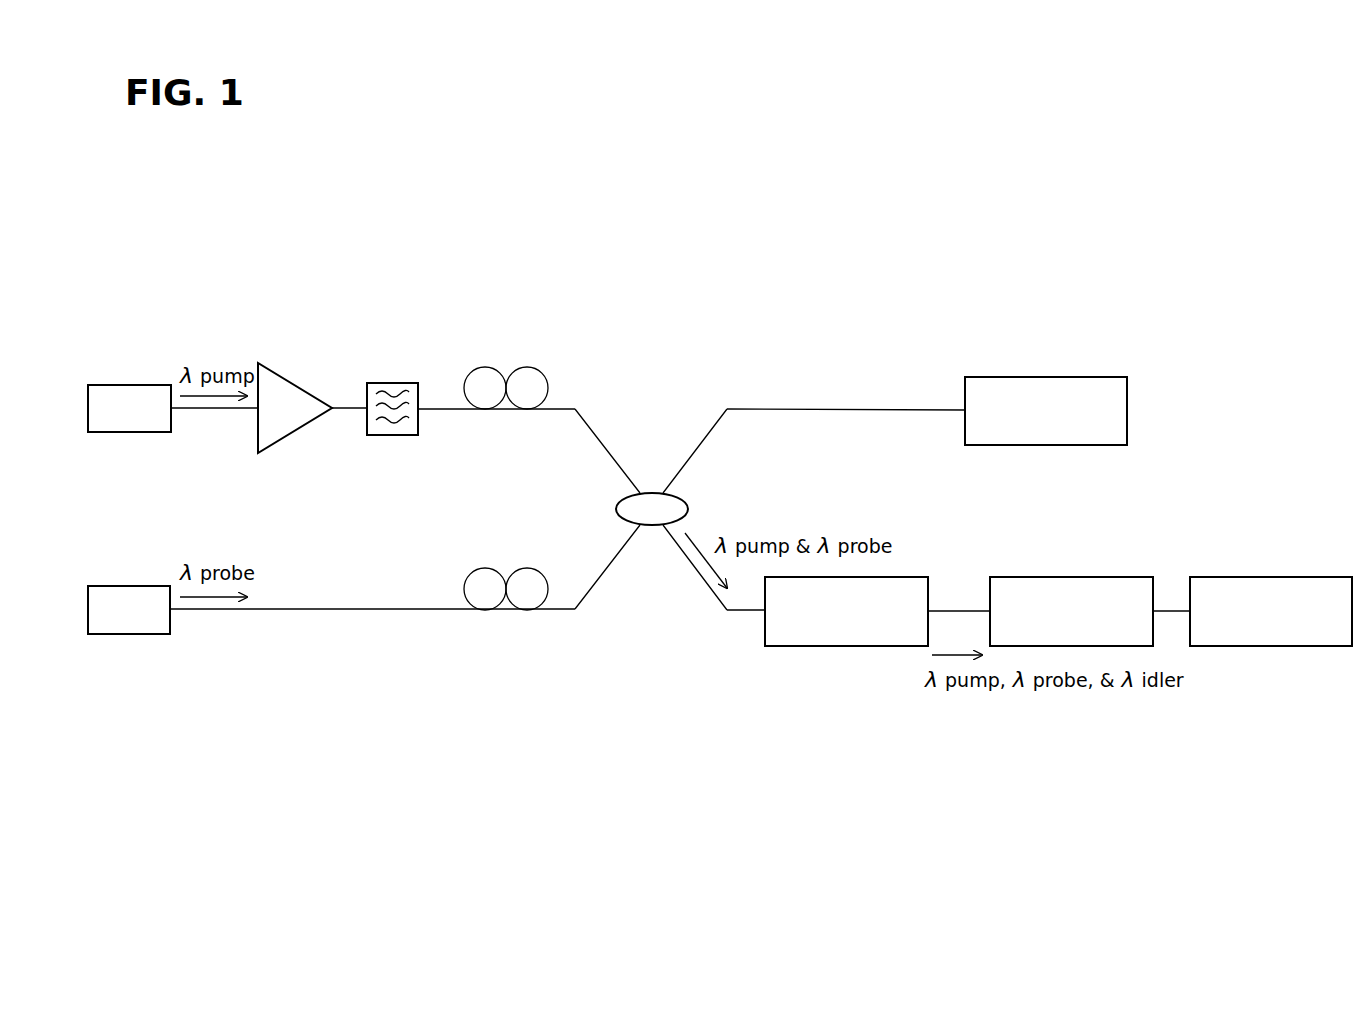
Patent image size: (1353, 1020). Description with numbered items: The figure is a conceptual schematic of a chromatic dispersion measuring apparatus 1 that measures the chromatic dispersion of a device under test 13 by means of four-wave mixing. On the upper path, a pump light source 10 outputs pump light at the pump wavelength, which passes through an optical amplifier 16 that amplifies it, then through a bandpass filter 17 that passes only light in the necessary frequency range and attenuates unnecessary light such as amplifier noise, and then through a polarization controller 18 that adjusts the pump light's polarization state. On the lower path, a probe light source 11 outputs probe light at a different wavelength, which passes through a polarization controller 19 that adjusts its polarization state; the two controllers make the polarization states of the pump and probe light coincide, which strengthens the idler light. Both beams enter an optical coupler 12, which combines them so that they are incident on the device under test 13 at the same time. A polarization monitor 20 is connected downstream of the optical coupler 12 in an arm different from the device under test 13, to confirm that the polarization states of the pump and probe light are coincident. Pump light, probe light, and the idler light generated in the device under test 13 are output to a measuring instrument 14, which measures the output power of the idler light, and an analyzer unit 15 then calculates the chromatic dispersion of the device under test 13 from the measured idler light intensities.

The chromatic dispersion measuring apparatus 1 is at (1133, 258).
The pump light source 10 is at (124, 385).
The probe light source 11 is at (124, 586).
The optical coupler 12 is at (688, 509).
The device under test 13 is at (913, 577).
The measuring instrument 14 is at (1117, 577).
The analyzer unit 15 is at (1317, 577).
The optical amplifier 16 is at (297, 380).
The bandpass filter 17 is at (392, 383).
The polarization controller 18 is at (525, 367).
The polarization controller 19 is at (525, 568).
The polarization monitor 20 is at (1090, 377).